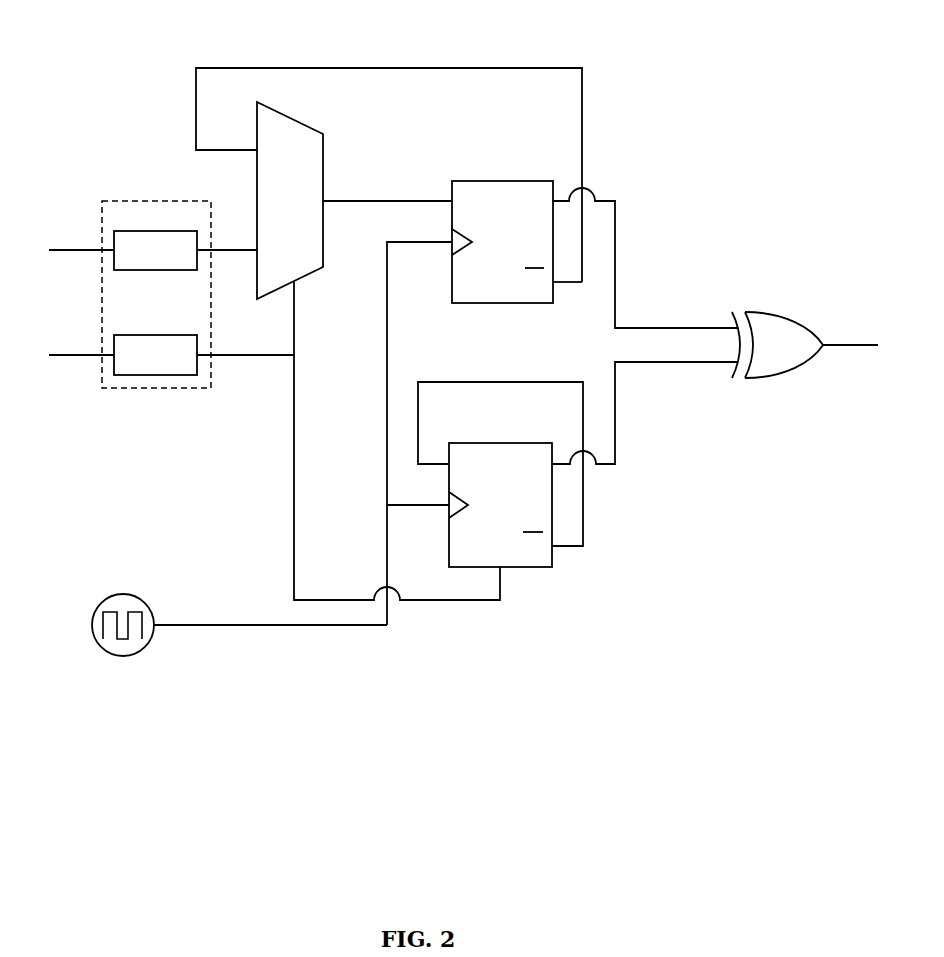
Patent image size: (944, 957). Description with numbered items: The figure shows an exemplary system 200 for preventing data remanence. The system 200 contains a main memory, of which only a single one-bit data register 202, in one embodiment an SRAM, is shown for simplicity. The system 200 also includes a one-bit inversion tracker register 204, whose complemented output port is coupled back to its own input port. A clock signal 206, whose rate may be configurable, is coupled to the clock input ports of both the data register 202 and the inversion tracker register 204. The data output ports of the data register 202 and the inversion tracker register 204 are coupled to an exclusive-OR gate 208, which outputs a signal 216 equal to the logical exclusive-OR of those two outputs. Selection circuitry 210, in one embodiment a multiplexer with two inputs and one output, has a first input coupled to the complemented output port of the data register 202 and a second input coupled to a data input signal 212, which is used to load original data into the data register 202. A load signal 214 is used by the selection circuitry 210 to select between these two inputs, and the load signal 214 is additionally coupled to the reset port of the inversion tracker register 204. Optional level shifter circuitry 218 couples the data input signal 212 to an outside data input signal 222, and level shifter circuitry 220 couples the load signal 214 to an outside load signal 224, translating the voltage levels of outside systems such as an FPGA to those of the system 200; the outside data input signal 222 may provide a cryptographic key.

The system 200 is at (387, 27).
The data register 202 is at (562, 390).
The inversion tracker register 204 is at (562, 464).
The clock signal 206 is at (239, 611).
The exclusive-OR gate 208 is at (777, 331).
The selection circuitry 210 is at (354, 199).
The data input signal 212 is at (227, 238).
The load signal 214 is at (348, 441).
The signal 216 is at (850, 331).
The level shifter circuitry 218 is at (155, 237).
The level shifter circuitry 220 is at (155, 343).
The outside data input signal 222 is at (81, 238).
The outside load signal 224 is at (81, 342).